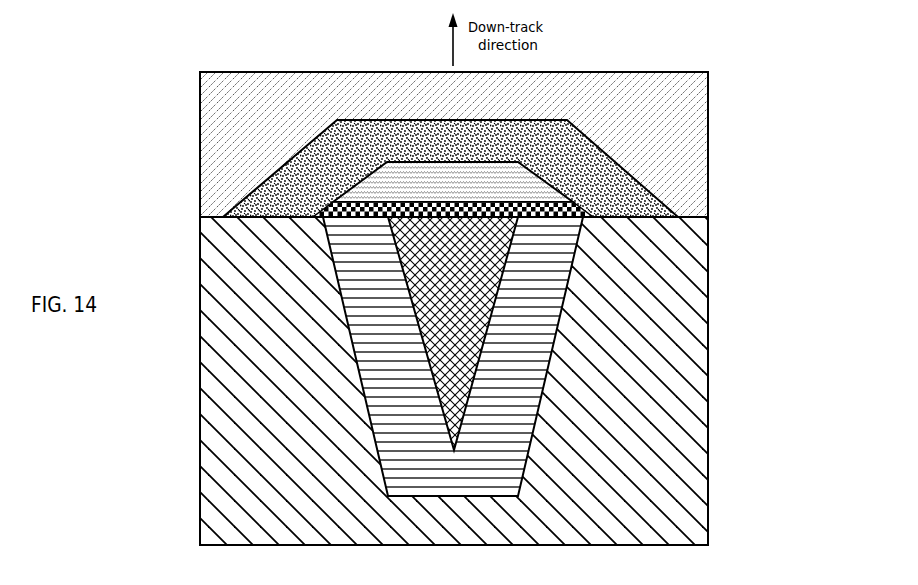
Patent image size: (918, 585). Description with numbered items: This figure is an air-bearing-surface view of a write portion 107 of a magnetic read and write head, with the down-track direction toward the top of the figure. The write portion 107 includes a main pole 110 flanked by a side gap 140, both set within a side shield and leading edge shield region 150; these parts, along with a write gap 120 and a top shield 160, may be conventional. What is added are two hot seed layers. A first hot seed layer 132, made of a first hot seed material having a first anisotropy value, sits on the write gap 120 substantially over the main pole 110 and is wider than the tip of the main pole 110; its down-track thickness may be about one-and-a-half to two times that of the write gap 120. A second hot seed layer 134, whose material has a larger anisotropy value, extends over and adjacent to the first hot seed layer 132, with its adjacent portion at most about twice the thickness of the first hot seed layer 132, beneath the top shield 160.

The write portion 107 is at (768, 150).
The main pole 110 is at (441, 280).
The write gap 120 is at (345, 212).
The first hot seed layer 132 is at (440, 192).
The second hot seed layer 134 is at (440, 150).
The side gap 140 is at (441, 478).
The side shield and leading edge shield region 150 is at (441, 534).
The top shield 160 is at (440, 104).